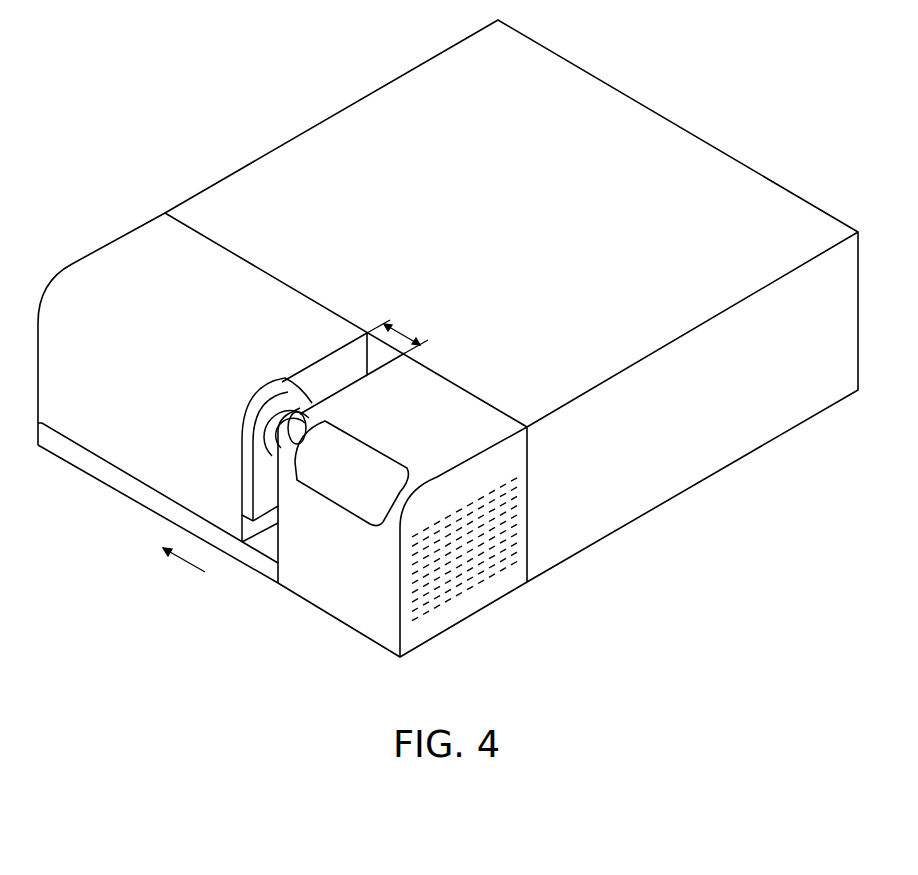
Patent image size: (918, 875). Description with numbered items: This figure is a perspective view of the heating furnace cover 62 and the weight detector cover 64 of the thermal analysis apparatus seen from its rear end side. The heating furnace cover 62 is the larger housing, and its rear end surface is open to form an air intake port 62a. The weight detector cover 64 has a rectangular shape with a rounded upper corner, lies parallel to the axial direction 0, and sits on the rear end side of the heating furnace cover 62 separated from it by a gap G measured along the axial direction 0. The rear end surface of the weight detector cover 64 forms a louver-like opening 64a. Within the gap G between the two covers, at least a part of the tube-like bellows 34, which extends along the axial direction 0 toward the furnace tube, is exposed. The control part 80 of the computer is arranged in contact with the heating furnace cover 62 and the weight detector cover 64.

The control part 80 is at (318, 145).
The heating furnace cover 62 is at (152, 477).
The air intake port 62a is at (333, 362).
The bellows 34 is at (290, 422).
The gap G is at (403, 333).
The weight detector cover 64 is at (332, 600).
The louver-like opening 64a is at (465, 580).
The axial direction 0 is at (184, 567).